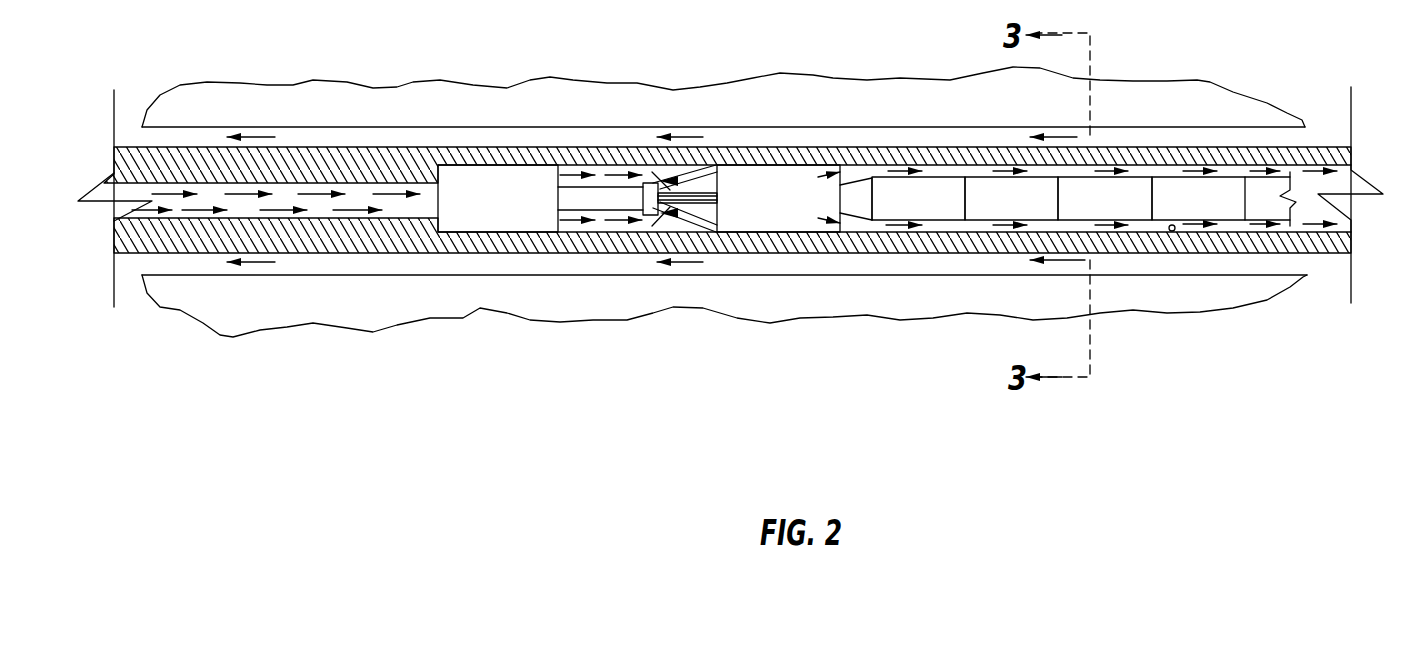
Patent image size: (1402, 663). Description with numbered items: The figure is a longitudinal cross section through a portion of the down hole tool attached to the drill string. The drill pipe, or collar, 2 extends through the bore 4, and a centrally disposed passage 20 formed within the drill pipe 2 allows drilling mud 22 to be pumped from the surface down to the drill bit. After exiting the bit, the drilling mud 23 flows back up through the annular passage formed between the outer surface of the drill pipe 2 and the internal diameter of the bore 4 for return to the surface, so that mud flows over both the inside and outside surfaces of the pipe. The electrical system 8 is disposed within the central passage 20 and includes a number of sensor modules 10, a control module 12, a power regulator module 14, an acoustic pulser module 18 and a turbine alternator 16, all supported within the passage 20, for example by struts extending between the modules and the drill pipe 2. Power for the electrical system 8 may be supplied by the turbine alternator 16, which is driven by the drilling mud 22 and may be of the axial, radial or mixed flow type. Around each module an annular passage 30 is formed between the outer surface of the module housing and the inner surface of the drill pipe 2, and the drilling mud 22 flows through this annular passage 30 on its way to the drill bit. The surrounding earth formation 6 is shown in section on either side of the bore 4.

The drill pipe 2 is at (734, 143).
The bore 4 is at (732, 170).
The formation 6 is at (724, 186).
The electrical system 8 is at (834, 271).
The sensor module 10 is at (1172, 231).
The control module 12 is at (1005, 274).
The power regulator module 14 is at (915, 274).
The turbine alternator 16 is at (751, 267).
The acoustic pulser module 18 is at (535, 267).
The centrally disposed passage 20 is at (1335, 268).
The drilling mud 22 is at (607, 138).
The drilling mud 23 is at (626, 154).
The annular passage 30 is at (1111, 129).